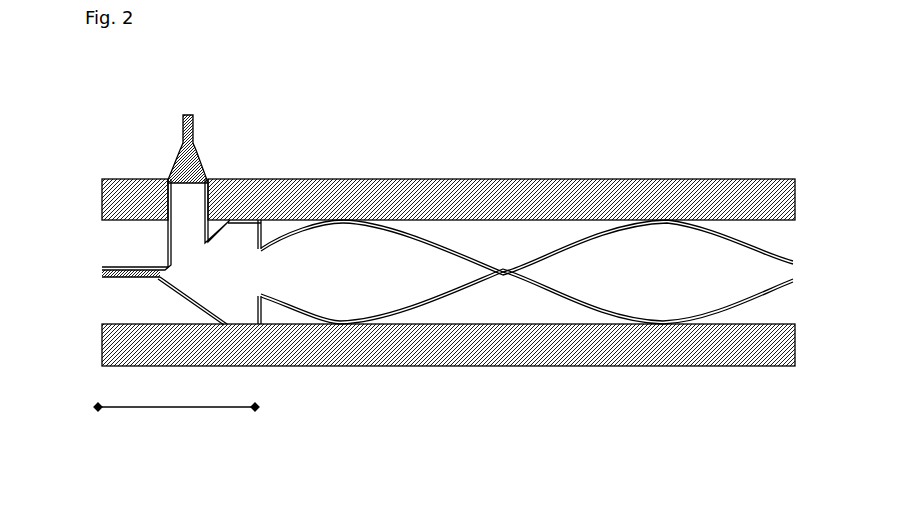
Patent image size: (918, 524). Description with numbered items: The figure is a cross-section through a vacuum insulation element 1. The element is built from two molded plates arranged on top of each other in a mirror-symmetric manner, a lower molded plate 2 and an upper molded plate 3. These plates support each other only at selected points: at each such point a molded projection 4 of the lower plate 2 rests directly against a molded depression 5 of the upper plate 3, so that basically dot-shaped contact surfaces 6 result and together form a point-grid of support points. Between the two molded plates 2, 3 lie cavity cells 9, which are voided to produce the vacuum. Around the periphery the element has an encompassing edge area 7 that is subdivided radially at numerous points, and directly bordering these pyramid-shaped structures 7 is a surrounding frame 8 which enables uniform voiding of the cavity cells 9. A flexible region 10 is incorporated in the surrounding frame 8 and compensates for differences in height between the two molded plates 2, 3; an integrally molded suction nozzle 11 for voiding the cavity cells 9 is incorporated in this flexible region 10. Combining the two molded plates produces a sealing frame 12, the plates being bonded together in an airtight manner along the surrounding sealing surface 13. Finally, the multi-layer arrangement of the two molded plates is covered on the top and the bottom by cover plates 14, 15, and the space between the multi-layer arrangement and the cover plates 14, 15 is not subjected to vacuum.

The vacuum insulation element 1 is at (763, 119).
The lower molded plate 2 is at (408, 312).
The upper molded plate 3 is at (424, 237).
The molded projection 4 is at (272, 182).
The molded depression 5 is at (530, 262).
The contact surface 6 is at (503, 275).
The edge area 7 is at (176, 420).
The surrounding frame 8 is at (246, 240).
The cavity cell 9 is at (693, 292).
The flexible region 10 is at (187, 297).
The suction nozzle 11 is at (183, 160).
The sealing frame 12 is at (118, 266).
The sealing surface 13 is at (118, 278).
The upper cover plate 14 is at (725, 197).
The lower cover plate 15 is at (625, 365).